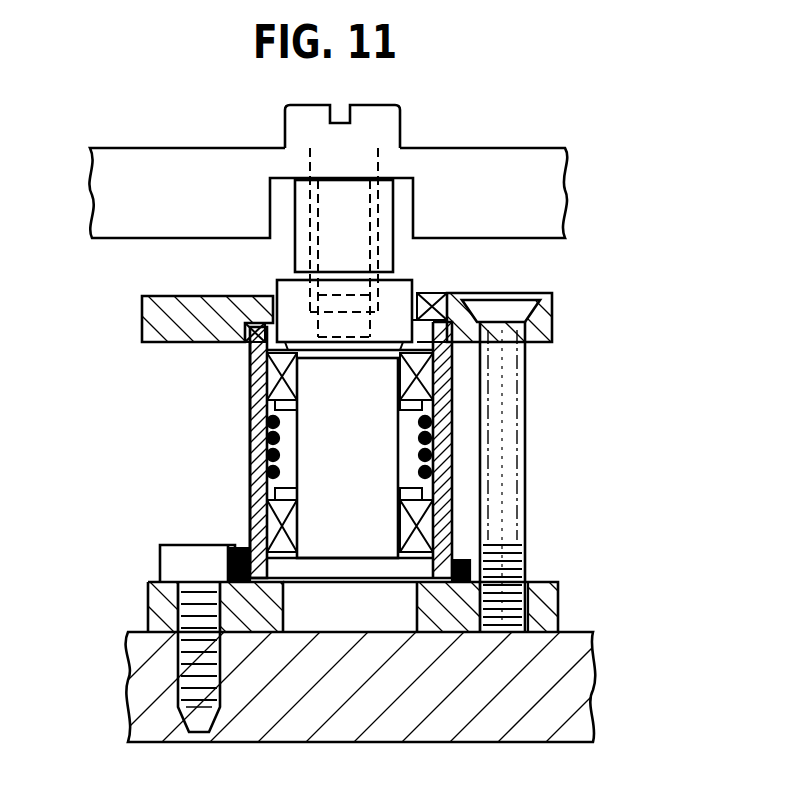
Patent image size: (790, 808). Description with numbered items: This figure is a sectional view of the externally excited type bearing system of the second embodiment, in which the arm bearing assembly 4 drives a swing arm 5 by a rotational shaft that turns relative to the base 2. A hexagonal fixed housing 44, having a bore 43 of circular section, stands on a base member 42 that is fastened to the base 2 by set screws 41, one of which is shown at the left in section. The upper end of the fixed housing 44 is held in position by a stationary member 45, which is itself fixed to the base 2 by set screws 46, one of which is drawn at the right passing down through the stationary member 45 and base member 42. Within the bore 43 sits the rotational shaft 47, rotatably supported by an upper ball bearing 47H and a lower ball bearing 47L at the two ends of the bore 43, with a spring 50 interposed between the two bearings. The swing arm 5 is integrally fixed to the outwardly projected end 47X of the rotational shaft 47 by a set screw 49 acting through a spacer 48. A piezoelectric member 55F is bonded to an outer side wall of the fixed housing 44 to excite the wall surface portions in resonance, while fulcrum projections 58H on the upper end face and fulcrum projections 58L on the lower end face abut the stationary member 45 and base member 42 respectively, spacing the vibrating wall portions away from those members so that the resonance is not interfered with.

The base 2 is at (594, 672).
The arm bearing assembly 4 is at (600, 447).
The swing arm 5 is at (566, 187).
The set screws 41 is at (160, 562).
The base member 42 is at (559, 598).
The bore 43 is at (423, 562).
The fixed housing 44 is at (450, 463).
The stationary member 45 is at (553, 322).
The set screws 46 is at (527, 384).
The rotational shaft 47 is at (310, 427).
The ball bearing 47H is at (433, 385).
The ball bearing 47L is at (433, 527).
The outwardly projected end 47X is at (277, 283).
The spacer 48 is at (300, 213).
The set screw 49 is at (401, 125).
The spring 50 is at (265, 465).
The piezoelectric member 55F is at (248, 370).
The fulcrum projections 58H is at (440, 300).
The fulcrum projections 58L is at (466, 565).